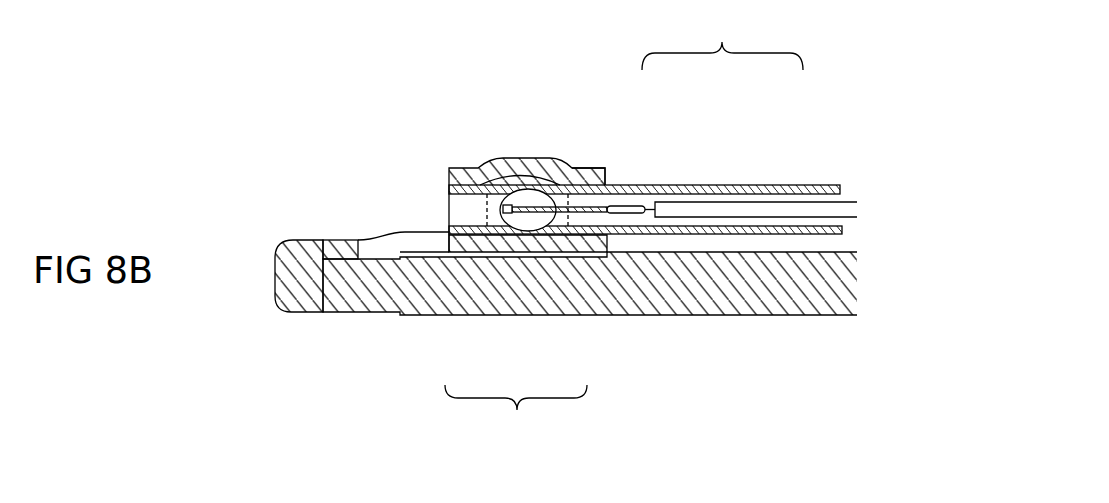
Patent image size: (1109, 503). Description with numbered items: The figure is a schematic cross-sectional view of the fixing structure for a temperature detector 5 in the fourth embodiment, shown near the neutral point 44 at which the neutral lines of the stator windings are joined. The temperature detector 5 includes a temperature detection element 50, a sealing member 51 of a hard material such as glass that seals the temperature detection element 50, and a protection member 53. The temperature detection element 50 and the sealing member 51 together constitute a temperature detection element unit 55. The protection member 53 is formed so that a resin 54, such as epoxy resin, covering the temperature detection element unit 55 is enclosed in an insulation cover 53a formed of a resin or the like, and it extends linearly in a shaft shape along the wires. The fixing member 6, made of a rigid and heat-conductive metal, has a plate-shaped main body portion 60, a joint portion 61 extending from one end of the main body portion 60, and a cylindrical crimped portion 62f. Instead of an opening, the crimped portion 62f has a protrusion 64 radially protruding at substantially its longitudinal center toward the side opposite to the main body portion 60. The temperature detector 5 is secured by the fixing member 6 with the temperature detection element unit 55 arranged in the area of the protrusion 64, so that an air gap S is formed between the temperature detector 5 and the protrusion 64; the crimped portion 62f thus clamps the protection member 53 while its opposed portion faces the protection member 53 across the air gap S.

The temperature detector 5 is at (820, 187).
The fixing member 6 is at (600, 250).
The neutral point 44 is at (298, 295).
The temperature detection element 50 is at (508, 216).
The sealing member 51 is at (536, 216).
The protection member 53 is at (722, 35).
The insulation cover 53a is at (733, 190).
The resin 54 is at (647, 198).
The temperature detection element unit 55 is at (516, 419).
The main body portion 60 is at (433, 240).
The joint portion 61 is at (339, 253).
The crimped portion 62f is at (589, 173).
The protrusion 64 is at (533, 170).
The air gap S is at (510, 158).